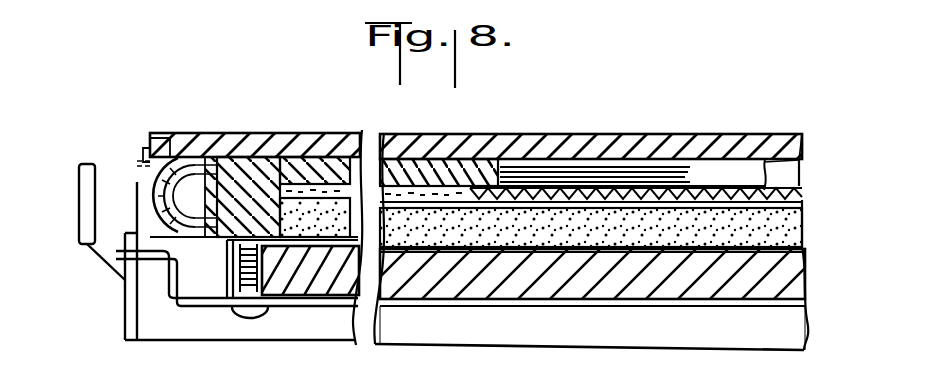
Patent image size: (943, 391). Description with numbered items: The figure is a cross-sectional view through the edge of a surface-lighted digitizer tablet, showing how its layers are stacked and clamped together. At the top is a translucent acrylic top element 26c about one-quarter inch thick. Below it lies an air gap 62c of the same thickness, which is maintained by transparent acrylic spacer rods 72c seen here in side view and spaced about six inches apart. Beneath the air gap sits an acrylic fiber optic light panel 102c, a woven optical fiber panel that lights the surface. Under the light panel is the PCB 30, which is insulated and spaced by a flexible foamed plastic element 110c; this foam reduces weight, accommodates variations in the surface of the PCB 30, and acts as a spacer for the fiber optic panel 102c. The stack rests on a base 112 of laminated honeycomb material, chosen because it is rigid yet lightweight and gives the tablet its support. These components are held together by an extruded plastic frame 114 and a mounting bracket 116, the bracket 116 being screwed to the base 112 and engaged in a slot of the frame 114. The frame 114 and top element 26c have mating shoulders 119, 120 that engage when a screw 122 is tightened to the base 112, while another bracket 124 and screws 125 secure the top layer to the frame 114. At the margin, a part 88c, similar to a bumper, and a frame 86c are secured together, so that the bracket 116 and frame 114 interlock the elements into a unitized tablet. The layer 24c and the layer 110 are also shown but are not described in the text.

The translucent acrylic top element 26c is at (315, 133).
The intermediate layer 24c is at (425, 134).
The flexible foamed plastic element 110c is at (478, 136).
The acrylic fiber optic light panel 102c is at (618, 188).
The transparent acrylic spacer rods 72c is at (640, 188).
The air gap 62c is at (790, 182).
The PCB 30 is at (453, 198).
The lower hatched layer 110 is at (705, 230).
The base 112 is at (564, 277).
The mounting bracket 116 is at (200, 307).
The screw 122 is at (243, 318).
The extruded plastic frame 114 is at (114, 262).
The bumper part 88c is at (158, 207).
The frame 86c is at (218, 233).
The bracket 124 is at (139, 145).
The mating shoulder 120 is at (154, 142).
The mating shoulder 119 is at (156, 131).
The screws 125 is at (192, 133).